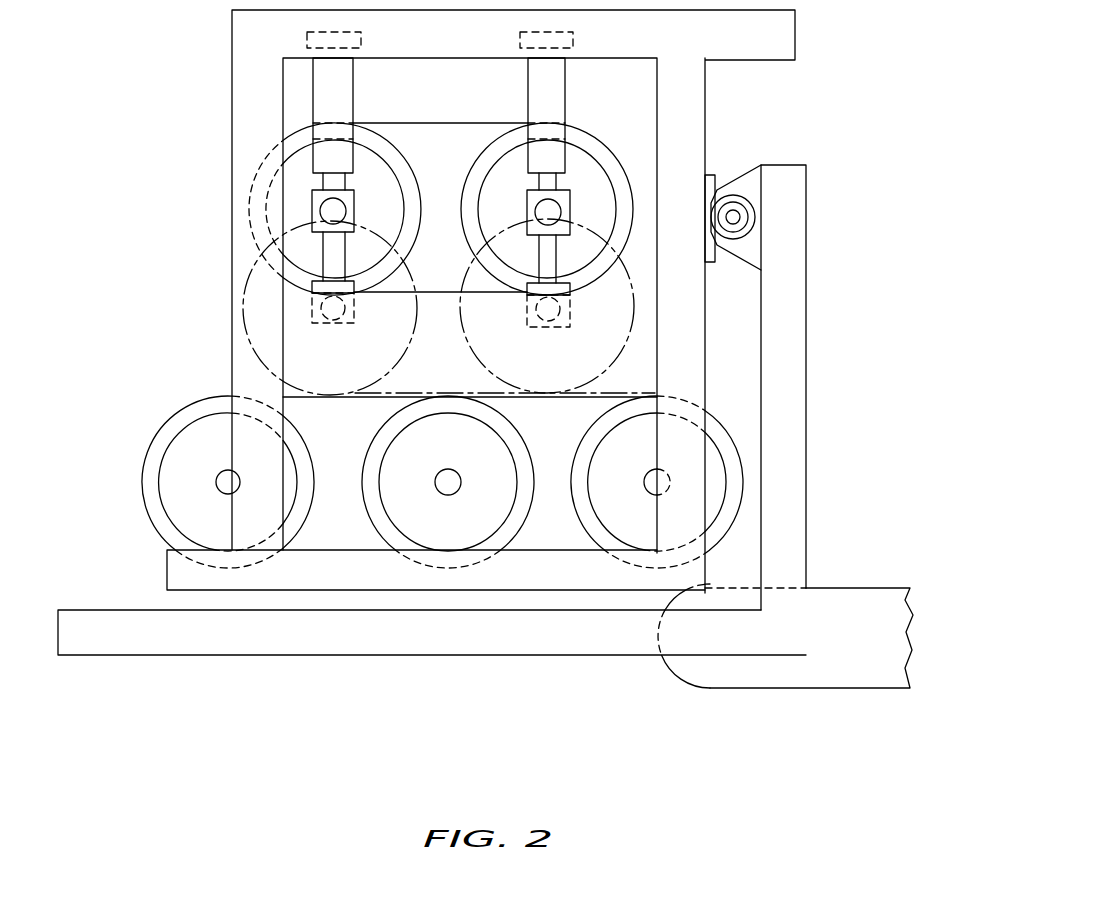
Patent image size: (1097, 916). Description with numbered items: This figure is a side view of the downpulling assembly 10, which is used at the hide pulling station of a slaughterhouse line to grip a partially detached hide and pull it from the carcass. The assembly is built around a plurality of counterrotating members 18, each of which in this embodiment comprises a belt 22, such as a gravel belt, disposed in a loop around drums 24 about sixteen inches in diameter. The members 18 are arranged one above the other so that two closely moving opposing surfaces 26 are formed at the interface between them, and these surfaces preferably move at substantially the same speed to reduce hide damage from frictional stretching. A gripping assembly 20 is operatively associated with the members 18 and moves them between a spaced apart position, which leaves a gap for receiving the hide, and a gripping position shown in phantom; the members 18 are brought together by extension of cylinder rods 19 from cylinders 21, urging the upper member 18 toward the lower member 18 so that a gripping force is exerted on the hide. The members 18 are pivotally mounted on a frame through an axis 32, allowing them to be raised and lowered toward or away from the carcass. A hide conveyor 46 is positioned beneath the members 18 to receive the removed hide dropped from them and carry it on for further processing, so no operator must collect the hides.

The downpulling assembly 10 is at (140, 252).
The counterrotating members 18 is at (553, 113).
The cylinder rods 19 is at (340, 180).
The gripping assembly 20 is at (300, 85).
The cylinders 21 is at (528, 106).
The belt 22 is at (424, 291).
The drums 24 is at (375, 170).
The opposing surfaces 26 is at (263, 397).
The axis 32 is at (733, 195).
The hide conveyor 46 is at (728, 690).